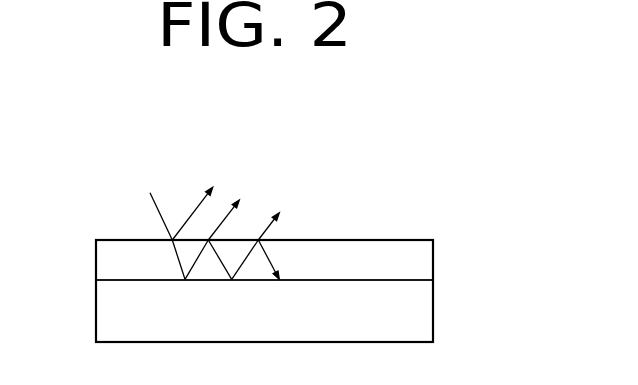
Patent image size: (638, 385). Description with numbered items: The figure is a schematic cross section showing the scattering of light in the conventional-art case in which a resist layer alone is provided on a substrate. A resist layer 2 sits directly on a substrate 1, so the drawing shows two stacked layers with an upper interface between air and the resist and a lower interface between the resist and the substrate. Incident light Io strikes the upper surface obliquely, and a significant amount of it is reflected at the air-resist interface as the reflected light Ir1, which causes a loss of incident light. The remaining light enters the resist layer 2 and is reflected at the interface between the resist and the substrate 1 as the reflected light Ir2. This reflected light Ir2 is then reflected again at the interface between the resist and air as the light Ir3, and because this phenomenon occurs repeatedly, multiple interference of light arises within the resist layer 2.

The substrate 1 is at (415, 303).
The resist layer 2 is at (417, 255).
The incident light Io is at (148, 199).
The light reflected at the air-resist interface Ir1 is at (206, 199).
The light reflected at the resist-substrate interface Ir2 is at (195, 265).
The light re-reflected at the resist-air interface Ir3 is at (222, 265).